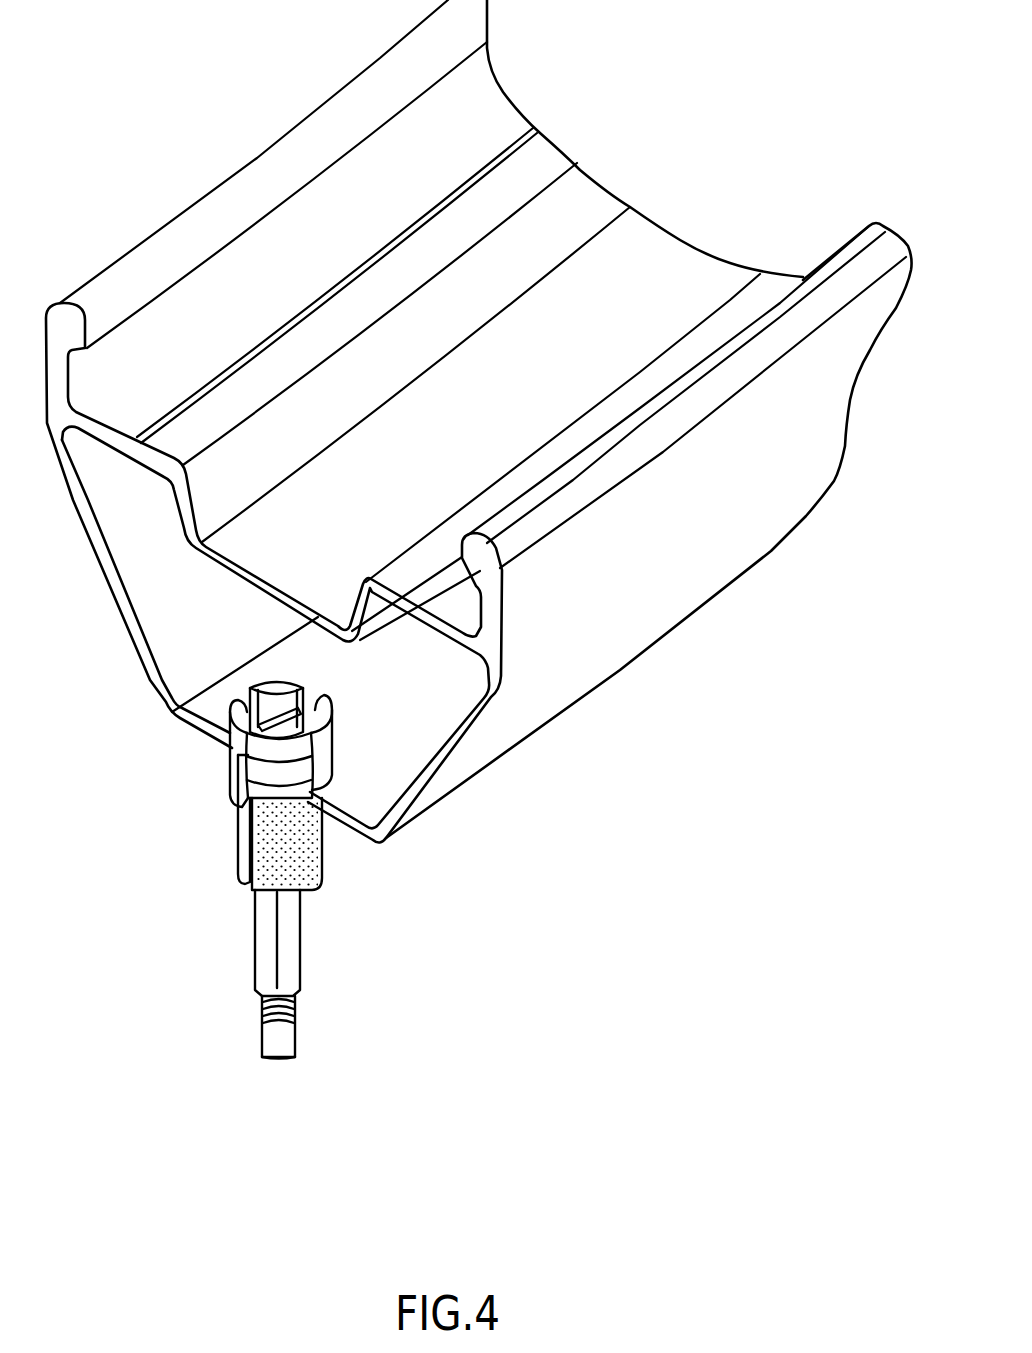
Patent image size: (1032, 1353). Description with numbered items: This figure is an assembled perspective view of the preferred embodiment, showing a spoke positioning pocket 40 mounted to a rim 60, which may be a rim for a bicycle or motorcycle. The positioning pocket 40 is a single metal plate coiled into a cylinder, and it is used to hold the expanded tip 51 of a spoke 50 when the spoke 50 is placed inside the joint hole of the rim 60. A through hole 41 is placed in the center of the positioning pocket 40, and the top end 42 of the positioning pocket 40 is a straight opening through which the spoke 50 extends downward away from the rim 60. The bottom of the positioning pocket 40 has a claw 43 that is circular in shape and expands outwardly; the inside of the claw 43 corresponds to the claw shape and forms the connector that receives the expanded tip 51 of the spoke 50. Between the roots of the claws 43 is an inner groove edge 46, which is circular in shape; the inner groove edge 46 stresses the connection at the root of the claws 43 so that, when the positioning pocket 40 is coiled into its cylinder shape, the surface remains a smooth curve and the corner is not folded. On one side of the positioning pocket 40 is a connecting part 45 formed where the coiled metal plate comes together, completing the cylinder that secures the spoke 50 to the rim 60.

The rim 60 is at (639, 611).
The positioning pocket 40 is at (226, 833).
The through hole 41 is at (254, 700).
The expanded tip 51 is at (280, 713).
The claw 43 is at (236, 756).
The inner groove edge 46 is at (231, 805).
The connecting part 45 is at (238, 857).
The top end 42 is at (312, 884).
The spoke 50 is at (262, 1044).